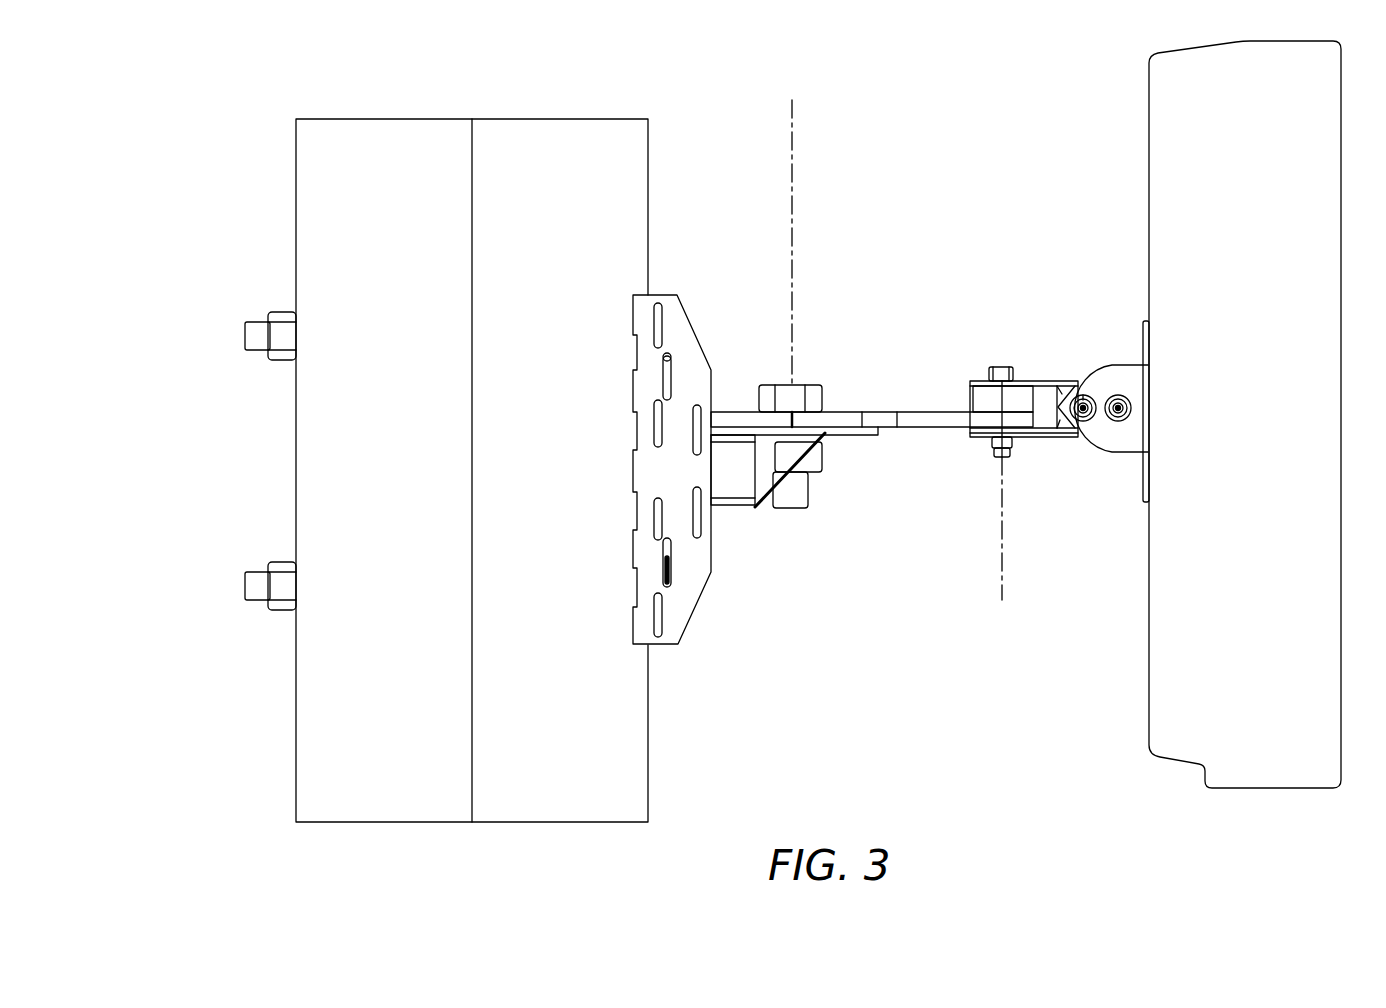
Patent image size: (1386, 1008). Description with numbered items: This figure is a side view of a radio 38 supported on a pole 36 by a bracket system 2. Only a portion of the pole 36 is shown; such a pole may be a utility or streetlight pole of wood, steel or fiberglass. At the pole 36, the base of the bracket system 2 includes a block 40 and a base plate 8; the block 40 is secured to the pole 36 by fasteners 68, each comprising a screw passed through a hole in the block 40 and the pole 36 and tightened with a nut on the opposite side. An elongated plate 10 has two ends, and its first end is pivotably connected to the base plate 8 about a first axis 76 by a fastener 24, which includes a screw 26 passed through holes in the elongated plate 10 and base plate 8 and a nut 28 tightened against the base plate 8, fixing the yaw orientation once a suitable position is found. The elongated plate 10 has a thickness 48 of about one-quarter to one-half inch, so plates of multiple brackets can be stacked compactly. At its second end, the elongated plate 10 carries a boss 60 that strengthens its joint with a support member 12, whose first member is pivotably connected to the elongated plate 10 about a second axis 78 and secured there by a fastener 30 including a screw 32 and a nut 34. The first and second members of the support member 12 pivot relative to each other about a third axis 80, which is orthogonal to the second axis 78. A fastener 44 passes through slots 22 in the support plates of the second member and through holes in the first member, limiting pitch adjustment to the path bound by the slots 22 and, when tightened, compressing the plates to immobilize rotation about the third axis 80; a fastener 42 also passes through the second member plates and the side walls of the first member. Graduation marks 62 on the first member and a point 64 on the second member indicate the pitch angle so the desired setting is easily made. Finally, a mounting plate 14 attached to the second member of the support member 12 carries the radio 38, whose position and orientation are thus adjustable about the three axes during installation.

The bracket system 2 is at (906, 240).
The base plate 8 is at (878, 436).
The elongated plate 10 is at (882, 412).
The support member 12 is at (978, 432).
The mounting plate 14 is at (1147, 472).
The slot 22 is at (1112, 380).
The fastener 24 is at (878, 332).
The screw 26 is at (798, 384).
The nut 28 is at (817, 460).
The fastener 30 is at (1010, 317).
The screw 32 is at (1005, 367).
The nut 34 is at (975, 437).
The pole 36 is at (649, 175).
The radio 38 is at (1149, 158).
The block 40 is at (711, 552).
The fastener 42 is at (1066, 396).
The fastener 44 is at (1120, 420).
The thickness 48 is at (900, 468).
The boss 60 is at (970, 398).
The graduation marks 62 is at (1062, 394).
The point 64 is at (1058, 416).
The fastener 68 is at (245, 330).
The first axis 76 is at (793, 123).
The second axis 78 is at (1003, 556).
The third axis 80 is at (1084, 395).